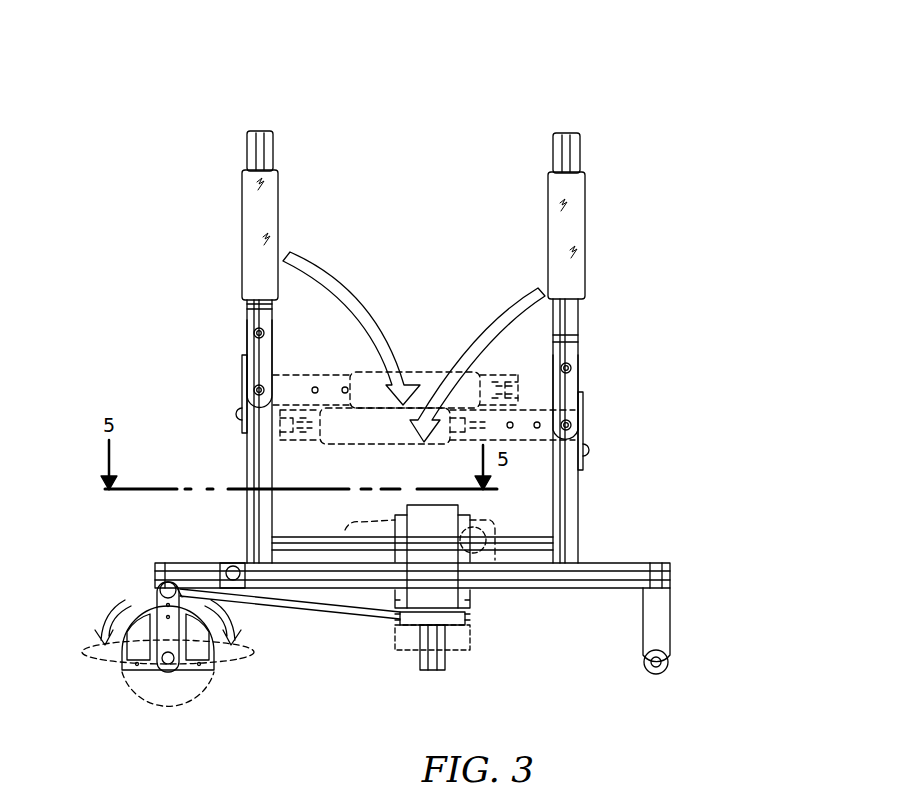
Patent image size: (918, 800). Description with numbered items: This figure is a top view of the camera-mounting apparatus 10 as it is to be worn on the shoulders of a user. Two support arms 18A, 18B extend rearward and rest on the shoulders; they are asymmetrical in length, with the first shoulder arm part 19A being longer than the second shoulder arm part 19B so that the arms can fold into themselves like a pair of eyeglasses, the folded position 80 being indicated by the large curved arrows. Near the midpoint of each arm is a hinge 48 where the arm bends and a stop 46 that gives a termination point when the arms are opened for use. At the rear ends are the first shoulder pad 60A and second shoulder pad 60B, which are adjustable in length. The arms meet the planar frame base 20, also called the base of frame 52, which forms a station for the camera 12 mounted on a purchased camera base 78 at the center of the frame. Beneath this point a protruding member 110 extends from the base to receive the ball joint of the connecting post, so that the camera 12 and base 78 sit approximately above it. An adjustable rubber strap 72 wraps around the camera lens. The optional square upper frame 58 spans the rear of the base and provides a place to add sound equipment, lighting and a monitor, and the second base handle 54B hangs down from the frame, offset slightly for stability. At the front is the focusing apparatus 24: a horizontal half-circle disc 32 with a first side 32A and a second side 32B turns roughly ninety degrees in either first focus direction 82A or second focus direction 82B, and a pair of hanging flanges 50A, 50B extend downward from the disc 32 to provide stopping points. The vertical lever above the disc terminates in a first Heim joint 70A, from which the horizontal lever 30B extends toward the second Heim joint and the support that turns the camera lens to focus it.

The apparatus 10 is at (150, 135).
The first support arm for shoulders 18A is at (272, 128).
The second support arm for shoulders 18B is at (553, 128).
The first shoulder pad 60A is at (248, 193).
The second shoulder pad 60B is at (580, 201).
The folded position 80 is at (418, 368).
The stop on shoulder arms 46 is at (258, 363).
The hinges on shoulder arms 48 is at (252, 405).
The first shoulder arm part 19A is at (250, 447).
The second shoulder arm part 19B is at (579, 541).
The frame base 20 is at (163, 558).
The camera base 78 is at (400, 503).
The camera 12 is at (498, 525).
The base of frame 52 is at (195, 561).
The first Heim joint 70A is at (166, 582).
The first side of dome on half circle 32A is at (127, 612).
The first focus direction 82A is at (103, 622).
The second focus direction 82B is at (237, 622).
The second side of dome on half circle 32B is at (128, 675).
The horizontal lever on focusing apparatus 30B is at (345, 614).
The adjustable rubber strap 72 is at (460, 641).
The protruding member on base 110 is at (447, 660).
The focusing apparatus 24 is at (238, 676).
The first pin for focusing 50A is at (140, 676).
The second pin for focusing 50B is at (200, 676).
The curved base (half circle)/disc 32 is at (160, 678).
The upper frame 58 is at (553, 592).
The second base handle 54B is at (646, 674).